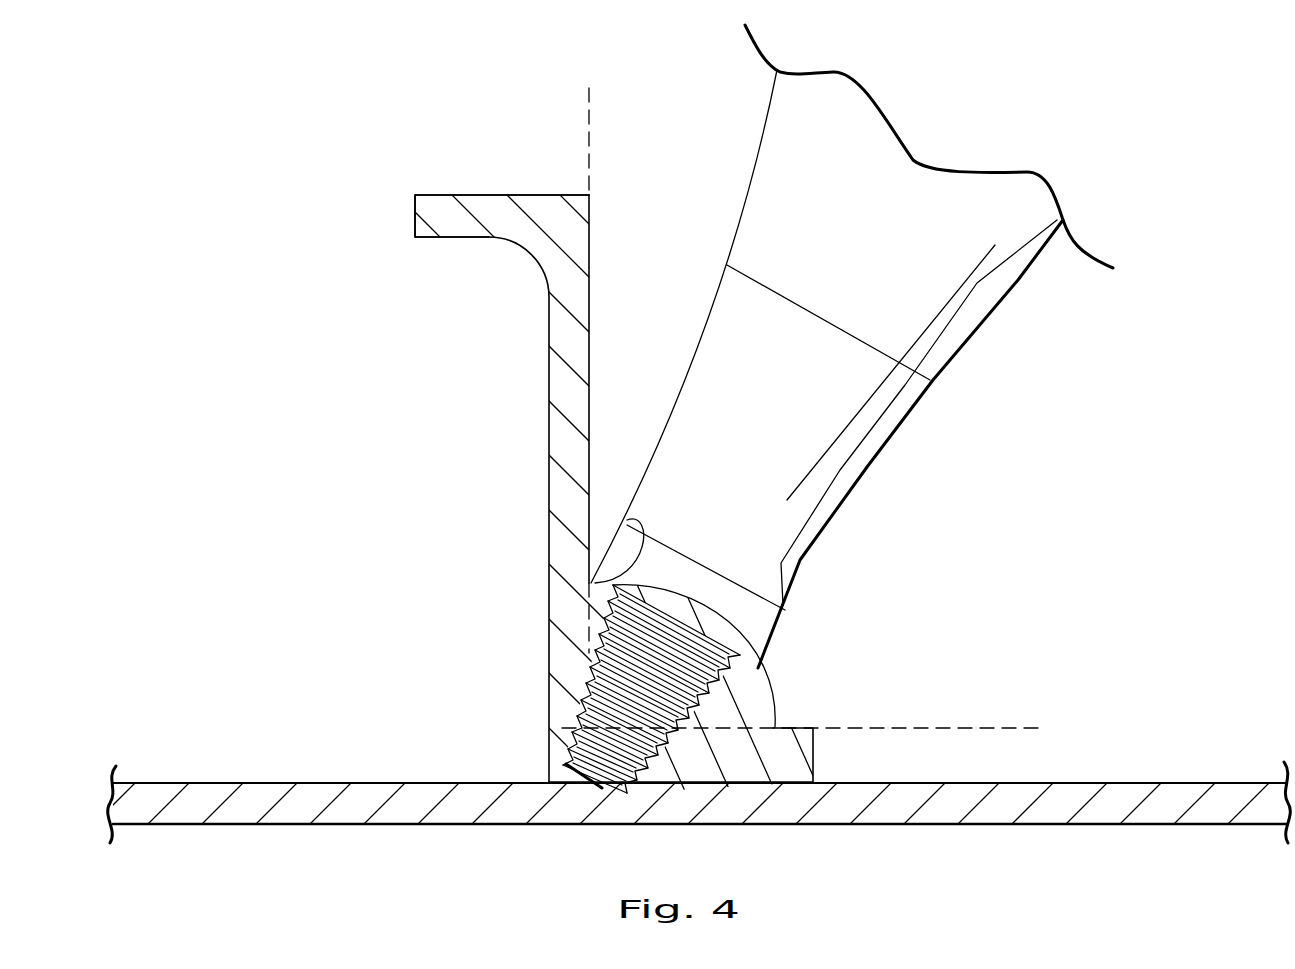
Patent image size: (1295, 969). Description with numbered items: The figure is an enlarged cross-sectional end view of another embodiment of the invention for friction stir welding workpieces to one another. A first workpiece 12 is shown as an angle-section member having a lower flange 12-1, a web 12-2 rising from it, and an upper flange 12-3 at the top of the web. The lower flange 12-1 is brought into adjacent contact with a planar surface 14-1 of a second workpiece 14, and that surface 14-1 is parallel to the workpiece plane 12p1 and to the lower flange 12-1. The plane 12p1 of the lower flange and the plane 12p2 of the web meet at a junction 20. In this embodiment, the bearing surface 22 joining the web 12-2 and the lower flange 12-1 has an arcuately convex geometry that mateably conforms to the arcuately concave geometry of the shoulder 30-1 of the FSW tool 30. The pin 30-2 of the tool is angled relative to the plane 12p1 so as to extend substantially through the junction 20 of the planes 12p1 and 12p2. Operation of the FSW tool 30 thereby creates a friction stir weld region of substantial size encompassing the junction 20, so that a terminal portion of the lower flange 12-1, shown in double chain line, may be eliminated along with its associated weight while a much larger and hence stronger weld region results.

The workpiece 12 is at (549, 408).
The lower flange 12-1 is at (730, 765).
The web 12-2 is at (567, 528).
The upper flange 12-3 is at (451, 206).
The workpiece plane 12p1 is at (982, 722).
The workpiece plane 12p2 is at (596, 115).
The second workpiece 14 is at (243, 802).
The planar surface 14-1 is at (1147, 783).
The junction 20 is at (582, 712).
The bearing surface 22 is at (636, 522).
The FSW tool 30 is at (973, 339).
The shoulder 30-1 is at (760, 637).
The pin 30-2 is at (610, 758).